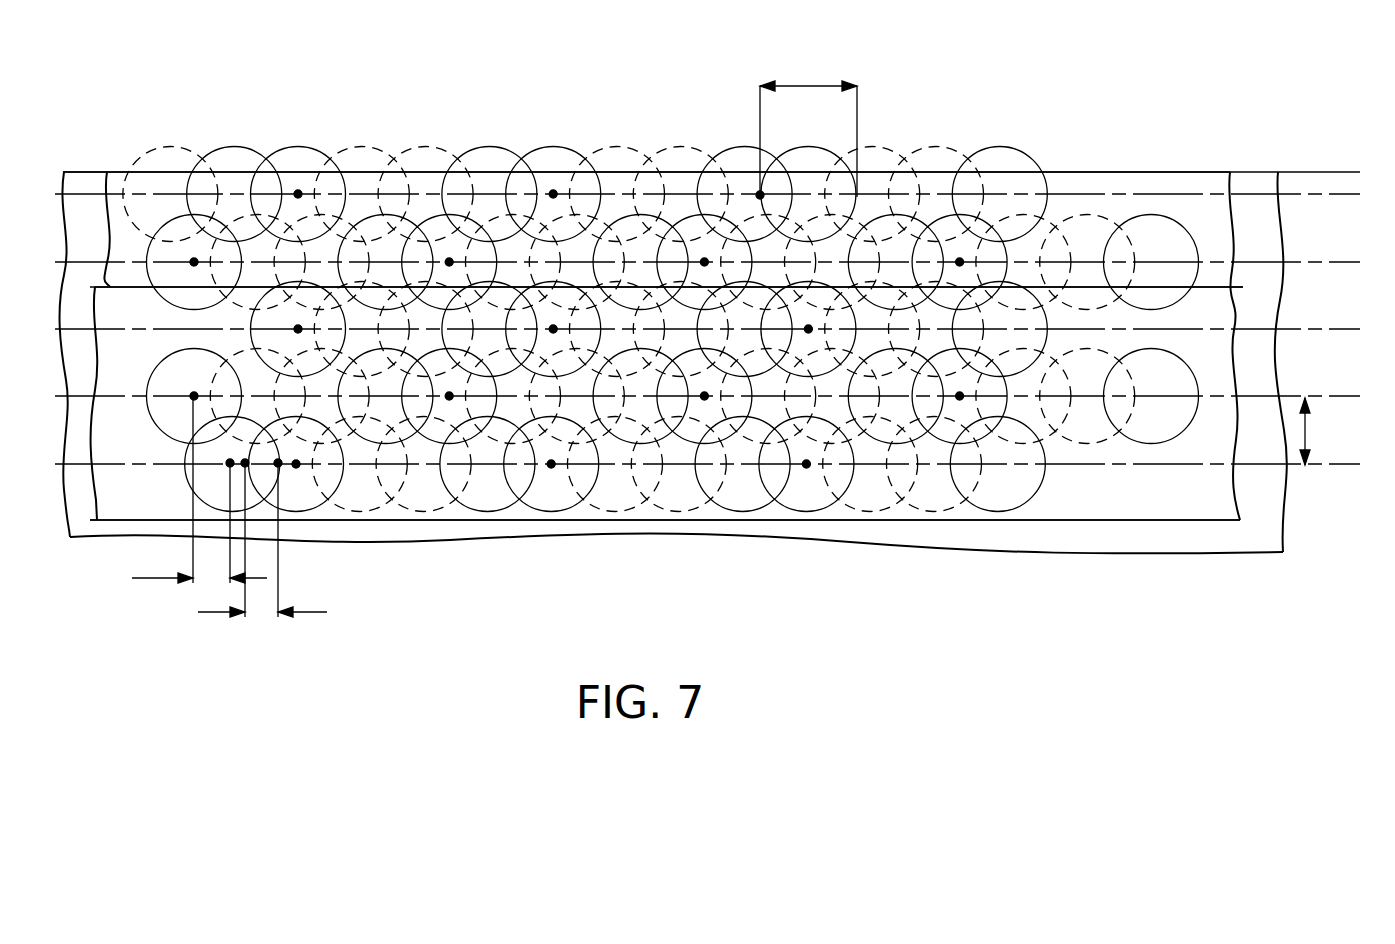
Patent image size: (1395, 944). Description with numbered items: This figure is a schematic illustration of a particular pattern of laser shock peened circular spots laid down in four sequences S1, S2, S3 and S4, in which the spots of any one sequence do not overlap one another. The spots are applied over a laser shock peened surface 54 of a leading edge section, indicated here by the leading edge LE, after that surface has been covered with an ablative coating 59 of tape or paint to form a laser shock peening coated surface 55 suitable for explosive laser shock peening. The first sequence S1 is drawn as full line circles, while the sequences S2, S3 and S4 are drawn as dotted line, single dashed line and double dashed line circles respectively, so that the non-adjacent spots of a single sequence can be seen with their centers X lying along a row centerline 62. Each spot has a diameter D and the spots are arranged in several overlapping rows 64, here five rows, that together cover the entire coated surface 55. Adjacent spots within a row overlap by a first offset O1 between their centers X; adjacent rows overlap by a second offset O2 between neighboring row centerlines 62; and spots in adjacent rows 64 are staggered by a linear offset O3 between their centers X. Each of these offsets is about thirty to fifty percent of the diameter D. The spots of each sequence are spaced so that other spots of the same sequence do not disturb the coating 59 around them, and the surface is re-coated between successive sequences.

The laser shock peened surface 54 is at (1265, 520).
The laser shock peening coated surface 55 is at (1135, 505).
The ablative coating 59 is at (1128, 172).
The row centerline 62 is at (1208, 262).
The row 64 is at (120, 148).
The leading edge LE is at (1340, 172).
The diameter D is at (807, 88).
The first sequence S1 is at (300, 147).
The second sequence S2 is at (352, 147).
The third sequence S3 is at (435, 147).
The fourth sequence S4 is at (495, 147).
The center X is at (193, 262).
The first offset O1 is at (312, 612).
The second offset O2 is at (1307, 430).
The linear offset O3 is at (147, 578).